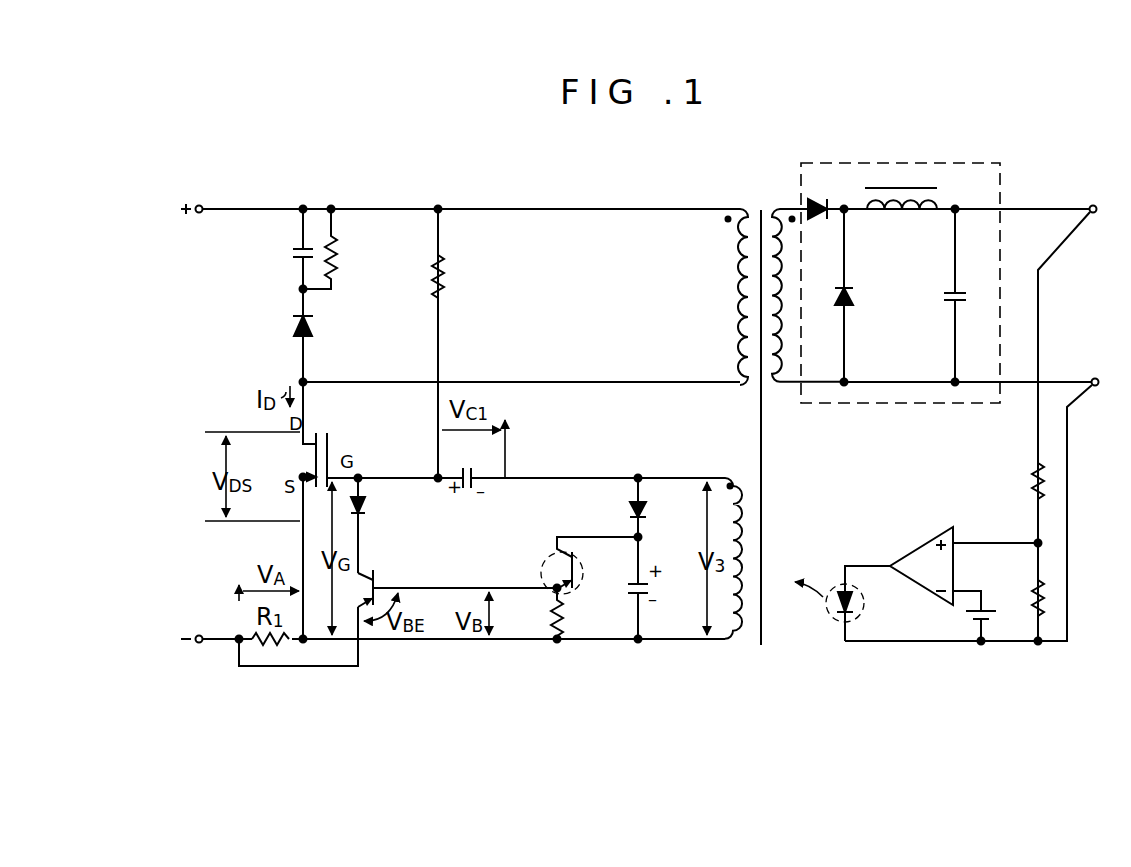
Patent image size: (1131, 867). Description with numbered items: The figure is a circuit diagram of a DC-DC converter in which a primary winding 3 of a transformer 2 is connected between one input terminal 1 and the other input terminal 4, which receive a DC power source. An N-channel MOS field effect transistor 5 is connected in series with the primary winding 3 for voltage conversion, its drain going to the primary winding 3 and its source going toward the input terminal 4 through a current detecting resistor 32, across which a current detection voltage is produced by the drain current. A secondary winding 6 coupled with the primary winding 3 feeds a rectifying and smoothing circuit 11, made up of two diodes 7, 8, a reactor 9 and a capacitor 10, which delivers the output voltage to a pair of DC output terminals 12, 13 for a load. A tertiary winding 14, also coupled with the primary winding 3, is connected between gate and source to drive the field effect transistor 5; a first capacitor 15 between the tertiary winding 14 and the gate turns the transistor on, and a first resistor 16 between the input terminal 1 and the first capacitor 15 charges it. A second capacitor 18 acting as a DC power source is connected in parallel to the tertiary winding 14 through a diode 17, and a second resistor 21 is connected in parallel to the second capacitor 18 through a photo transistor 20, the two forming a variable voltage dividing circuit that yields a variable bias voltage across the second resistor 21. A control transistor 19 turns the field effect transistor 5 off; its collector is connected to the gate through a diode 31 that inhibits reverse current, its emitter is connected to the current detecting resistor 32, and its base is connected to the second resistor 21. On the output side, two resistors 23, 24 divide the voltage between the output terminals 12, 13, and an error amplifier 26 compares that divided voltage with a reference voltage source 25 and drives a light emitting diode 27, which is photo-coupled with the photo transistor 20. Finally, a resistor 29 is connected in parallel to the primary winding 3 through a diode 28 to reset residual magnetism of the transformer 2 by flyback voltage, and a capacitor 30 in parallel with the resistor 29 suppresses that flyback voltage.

The input terminal 1 is at (198, 195).
The transformer 2 is at (758, 217).
The primary winding 3 is at (734, 230).
The input terminal 4 is at (199, 636).
The N-channel MOS type field effect transistor 5 is at (309, 448).
The secondary winding 6 is at (775, 376).
The diode 7 is at (828, 208).
The diode 8 is at (850, 308).
The reactor 9 is at (910, 212).
The capacitor 10 is at (948, 304).
The rectifying and smoothing circuit 11 is at (1000, 204).
The DC output terminal 12 is at (1093, 205).
The DC output terminal 13 is at (1095, 378).
The tertiary winding 14 is at (748, 638).
The first capacitor 15 is at (474, 462).
The first resistor 16 is at (445, 270).
The diode 17 is at (629, 514).
The second capacitor 18 is at (642, 583).
The control transistor 19 is at (374, 580).
The photo transistor 20 is at (575, 576).
The second resistor 21 is at (565, 618).
The resistor 23 is at (1028, 486).
The resistor 24 is at (1030, 592).
The reference voltage source 25 is at (970, 614).
The error amplifier 26 is at (932, 536).
The light emitting diode 27 is at (862, 607).
The diode 28 is at (296, 314).
The resistor 29 is at (339, 254).
The capacitor 30 is at (294, 247).
The diode 31 is at (366, 513).
The current detecting resistor 32 is at (275, 646).